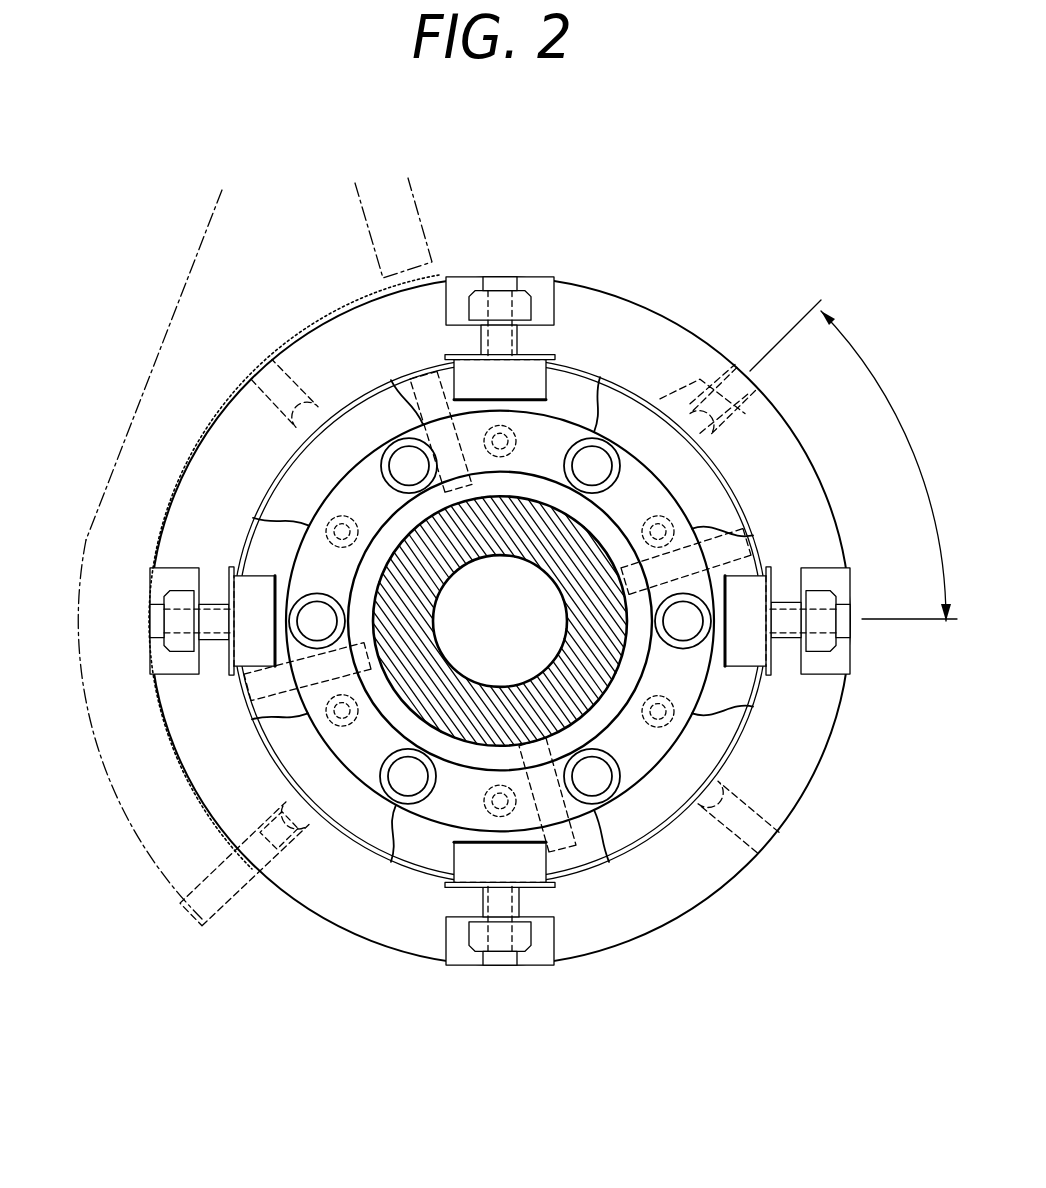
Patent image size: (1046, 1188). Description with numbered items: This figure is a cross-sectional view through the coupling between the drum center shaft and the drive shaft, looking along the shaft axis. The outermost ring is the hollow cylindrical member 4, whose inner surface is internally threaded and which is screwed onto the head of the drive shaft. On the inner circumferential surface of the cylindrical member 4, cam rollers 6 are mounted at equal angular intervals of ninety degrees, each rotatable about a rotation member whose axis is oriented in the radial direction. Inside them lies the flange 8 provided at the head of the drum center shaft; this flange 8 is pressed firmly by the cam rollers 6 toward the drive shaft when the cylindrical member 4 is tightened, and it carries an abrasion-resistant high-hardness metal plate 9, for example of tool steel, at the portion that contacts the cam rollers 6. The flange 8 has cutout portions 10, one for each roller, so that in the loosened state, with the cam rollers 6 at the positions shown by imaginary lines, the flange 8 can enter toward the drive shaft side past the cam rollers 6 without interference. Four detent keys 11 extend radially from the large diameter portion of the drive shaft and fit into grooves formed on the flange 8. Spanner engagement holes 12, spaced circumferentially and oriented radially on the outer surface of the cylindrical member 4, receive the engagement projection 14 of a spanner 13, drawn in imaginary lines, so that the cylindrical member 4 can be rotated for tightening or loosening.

The cylindrical member 4 is at (640, 335).
The cam rollers 6 is at (523, 377).
The flange 8 is at (735, 692).
The high-hardness metal plate 9 is at (422, 845).
The cutout portions 10 is at (335, 445).
The detent keys 11 is at (255, 727).
The spanner engagement holes 12 is at (273, 840).
The spanner 13 is at (143, 370).
The engagement projection 14 is at (277, 848).